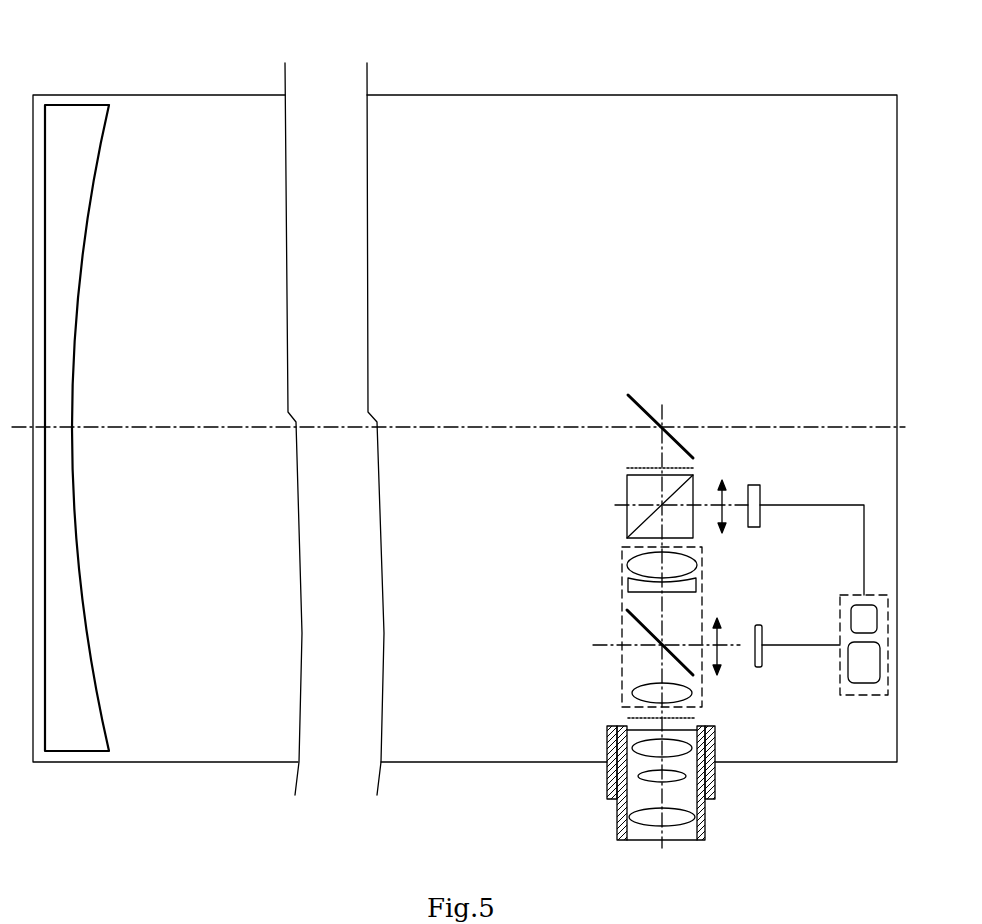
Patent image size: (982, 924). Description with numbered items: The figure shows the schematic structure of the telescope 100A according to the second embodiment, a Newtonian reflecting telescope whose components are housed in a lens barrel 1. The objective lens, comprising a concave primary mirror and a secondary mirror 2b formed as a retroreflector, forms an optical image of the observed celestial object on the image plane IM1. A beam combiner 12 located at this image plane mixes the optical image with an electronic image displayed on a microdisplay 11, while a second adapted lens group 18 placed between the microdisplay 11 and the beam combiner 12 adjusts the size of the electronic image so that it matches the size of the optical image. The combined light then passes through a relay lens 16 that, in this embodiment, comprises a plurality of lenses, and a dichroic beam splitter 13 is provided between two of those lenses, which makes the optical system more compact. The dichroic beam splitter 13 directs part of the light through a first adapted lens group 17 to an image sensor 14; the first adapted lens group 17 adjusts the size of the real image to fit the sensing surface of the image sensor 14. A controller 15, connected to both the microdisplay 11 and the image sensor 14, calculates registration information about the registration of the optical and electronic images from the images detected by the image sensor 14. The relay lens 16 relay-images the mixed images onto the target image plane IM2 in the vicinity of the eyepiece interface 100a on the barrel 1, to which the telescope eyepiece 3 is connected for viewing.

The telescope 100A is at (138, 75).
The lens barrel 1 is at (545, 95).
The secondary mirror 2b is at (643, 402).
The image plane IM1 is at (612, 466).
The beam combiner 12 is at (627, 505).
The relay lens 16 is at (622, 575).
The dichroic beam splitter 13 is at (648, 633).
The target image plane IM2 is at (610, 715).
The second adapted lens group 18 is at (727, 482).
The microdisplay 11 is at (762, 496).
The controller 15 is at (855, 594).
The first adapted lens group 17 is at (722, 622).
The image sensor 14 is at (758, 666).
The eyepiece interface 100a is at (717, 772).
The telescope eyepiece 3 is at (617, 812).